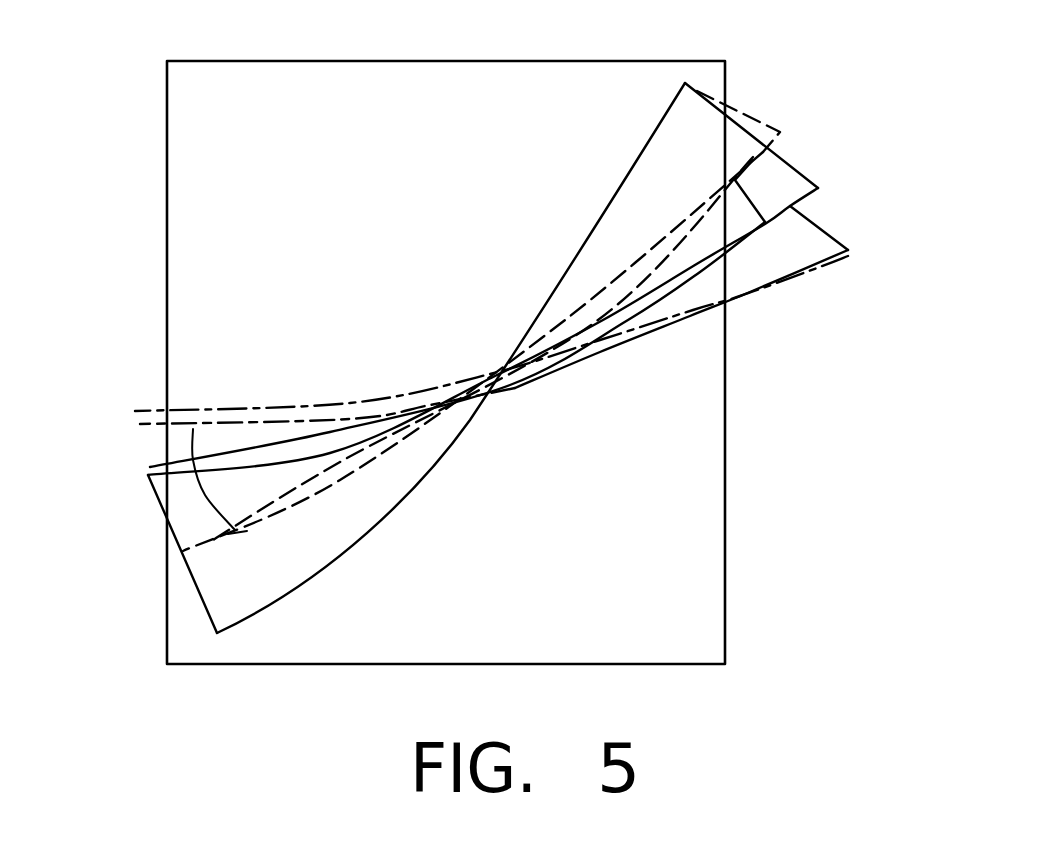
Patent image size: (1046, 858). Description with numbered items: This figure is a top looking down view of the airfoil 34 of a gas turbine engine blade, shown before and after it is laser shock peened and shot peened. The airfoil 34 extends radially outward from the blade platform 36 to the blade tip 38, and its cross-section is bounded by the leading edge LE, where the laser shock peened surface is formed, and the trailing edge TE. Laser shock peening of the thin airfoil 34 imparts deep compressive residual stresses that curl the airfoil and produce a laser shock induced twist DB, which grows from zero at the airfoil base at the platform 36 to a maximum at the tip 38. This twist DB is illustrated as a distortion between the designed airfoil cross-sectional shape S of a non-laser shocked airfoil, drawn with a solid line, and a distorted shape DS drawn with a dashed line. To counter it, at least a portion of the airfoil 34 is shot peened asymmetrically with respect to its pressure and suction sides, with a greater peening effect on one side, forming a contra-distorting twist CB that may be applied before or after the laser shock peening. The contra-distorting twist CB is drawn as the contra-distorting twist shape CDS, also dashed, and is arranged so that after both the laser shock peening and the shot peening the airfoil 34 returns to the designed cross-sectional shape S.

The airfoil 34 is at (220, 597).
The blade platform 36 is at (203, 303).
The blade tip 38 is at (292, 445).
The trailing edge TE is at (787, 157).
The leading edge LE is at (165, 518).
The designed airfoil cross-sectional shape S is at (765, 224).
The distorted shape DS is at (733, 300).
The contra-distorting twist shape CDS is at (601, 291).
The laser shock induced twist DB is at (193, 429).
The contra-distorting twist CB is at (208, 508).